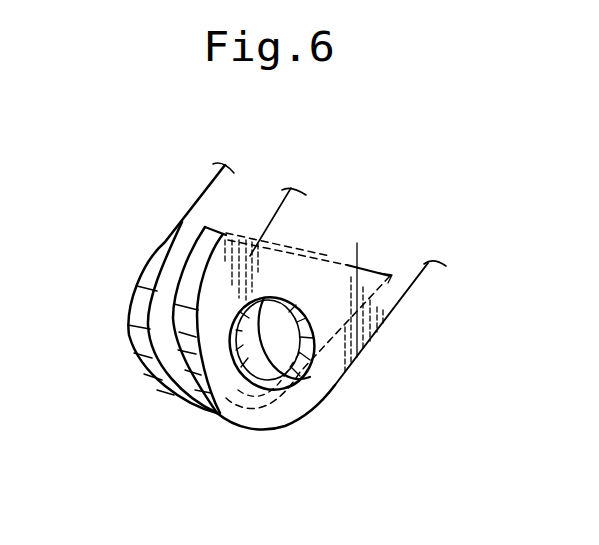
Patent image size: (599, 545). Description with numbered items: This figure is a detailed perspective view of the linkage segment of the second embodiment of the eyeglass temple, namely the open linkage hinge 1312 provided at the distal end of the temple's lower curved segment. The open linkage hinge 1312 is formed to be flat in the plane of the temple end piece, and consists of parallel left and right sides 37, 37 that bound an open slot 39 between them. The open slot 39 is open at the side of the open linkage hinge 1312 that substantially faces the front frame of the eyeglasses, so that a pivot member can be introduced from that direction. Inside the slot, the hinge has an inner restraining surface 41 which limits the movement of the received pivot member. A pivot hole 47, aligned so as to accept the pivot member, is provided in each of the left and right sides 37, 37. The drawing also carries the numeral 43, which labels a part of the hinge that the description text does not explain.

The first plate layer 37 is at (183, 333).
The second plate layer 39 is at (170, 366).
The third plate layer 43 is at (218, 227).
The hidden rear edge 41 is at (323, 256).
The bend junction with hole 47 is at (218, 413).
The laminated plate stack 1312 is at (469, 272).